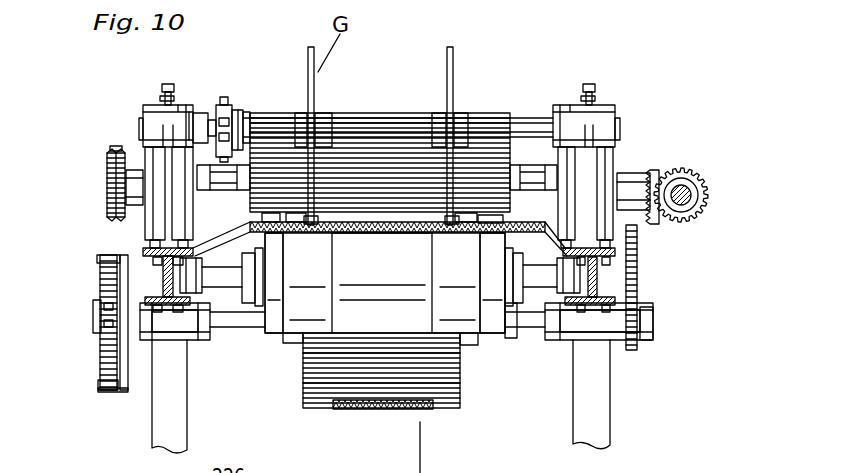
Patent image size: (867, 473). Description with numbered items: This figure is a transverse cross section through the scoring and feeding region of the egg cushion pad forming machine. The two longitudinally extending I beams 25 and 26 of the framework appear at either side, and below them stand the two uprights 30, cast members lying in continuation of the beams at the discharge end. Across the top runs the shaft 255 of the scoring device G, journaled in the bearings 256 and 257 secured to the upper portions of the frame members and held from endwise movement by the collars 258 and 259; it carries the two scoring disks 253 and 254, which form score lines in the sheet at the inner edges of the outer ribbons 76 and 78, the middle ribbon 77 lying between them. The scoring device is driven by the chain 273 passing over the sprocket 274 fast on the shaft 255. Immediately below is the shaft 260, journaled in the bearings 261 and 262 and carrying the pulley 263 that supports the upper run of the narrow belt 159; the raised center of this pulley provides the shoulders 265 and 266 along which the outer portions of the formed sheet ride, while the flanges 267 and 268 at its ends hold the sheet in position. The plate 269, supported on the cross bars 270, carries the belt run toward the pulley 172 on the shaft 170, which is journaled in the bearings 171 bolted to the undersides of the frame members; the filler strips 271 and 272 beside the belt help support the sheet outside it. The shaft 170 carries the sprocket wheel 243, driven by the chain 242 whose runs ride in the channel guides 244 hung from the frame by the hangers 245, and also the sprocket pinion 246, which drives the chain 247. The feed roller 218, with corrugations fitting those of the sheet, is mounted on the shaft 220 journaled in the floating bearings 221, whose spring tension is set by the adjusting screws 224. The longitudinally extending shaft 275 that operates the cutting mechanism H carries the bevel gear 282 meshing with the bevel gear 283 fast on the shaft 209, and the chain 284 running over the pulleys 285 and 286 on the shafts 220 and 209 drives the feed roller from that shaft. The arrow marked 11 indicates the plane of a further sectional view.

The section line 11 is at (420, 57).
The longitudinal I beam 25 is at (594, 340).
The longitudinal I beam 26 is at (170, 340).
The upright 30 is at (170, 420).
The ribbon 76 is at (452, 234).
The ribbon 77 is at (390, 226).
The ribbon 78 is at (298, 234).
The belt 159 is at (367, 233).
The shaft 170 is at (545, 340).
The bearing 171 is at (187, 325).
The pulley 172 is at (430, 380).
The shaft 209 is at (107, 190).
The feed roller 218 is at (397, 160).
The shaft 220 is at (227, 177).
The bearing 221 is at (560, 160).
The adjusting screw 224 is at (168, 84).
The chain 242 is at (103, 388).
The sprocket wheel 243 is at (108, 314).
The channel guide 244 is at (97, 258).
The hanger 245 is at (135, 357).
The sprocket pinion 246 is at (647, 325).
The chain 247 is at (640, 250).
The scoring disk 253 is at (310, 48).
The scoring disk 254 is at (453, 47).
The shaft 255 is at (367, 125).
The bearing 256 is at (158, 118).
The bearing 257 is at (605, 125).
The collar 258 is at (197, 110).
The collar 259 is at (556, 112).
The shaft 260 is at (228, 290).
The bearing 261 is at (183, 277).
The bearing 262 is at (572, 278).
The pulley 263 is at (355, 312).
The shoulder 265 is at (305, 305).
The shoulder 266 is at (447, 316).
The flange 267 is at (270, 325).
The flange 268 is at (506, 328).
The plate 269 is at (352, 226).
The cross bar 270 is at (540, 260).
The filler strip 271 is at (262, 217).
The filler strip 272 is at (504, 231).
The chain 273 is at (221, 100).
The sprocket 274 is at (237, 112).
The shaft 275 is at (688, 202).
The bevel gear 282 is at (707, 187).
The bevel gear 283 is at (655, 172).
The chain 284 is at (117, 150).
The pulley 285 is at (108, 155).
The pulley 286 is at (110, 215).